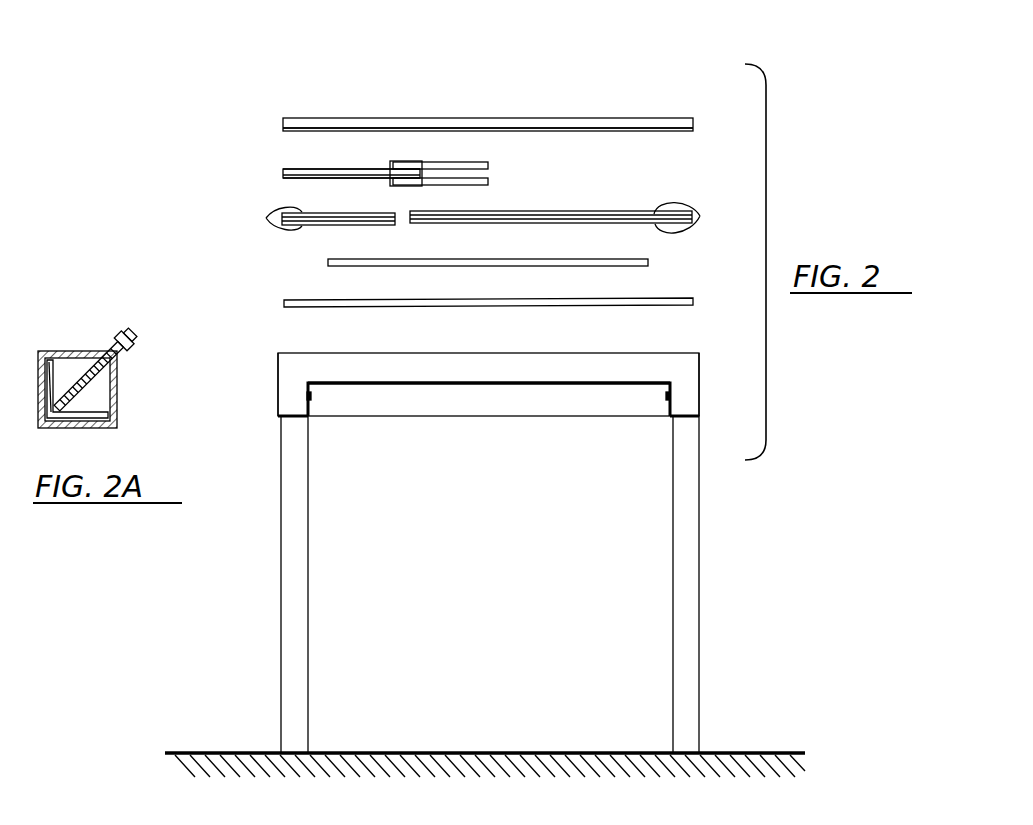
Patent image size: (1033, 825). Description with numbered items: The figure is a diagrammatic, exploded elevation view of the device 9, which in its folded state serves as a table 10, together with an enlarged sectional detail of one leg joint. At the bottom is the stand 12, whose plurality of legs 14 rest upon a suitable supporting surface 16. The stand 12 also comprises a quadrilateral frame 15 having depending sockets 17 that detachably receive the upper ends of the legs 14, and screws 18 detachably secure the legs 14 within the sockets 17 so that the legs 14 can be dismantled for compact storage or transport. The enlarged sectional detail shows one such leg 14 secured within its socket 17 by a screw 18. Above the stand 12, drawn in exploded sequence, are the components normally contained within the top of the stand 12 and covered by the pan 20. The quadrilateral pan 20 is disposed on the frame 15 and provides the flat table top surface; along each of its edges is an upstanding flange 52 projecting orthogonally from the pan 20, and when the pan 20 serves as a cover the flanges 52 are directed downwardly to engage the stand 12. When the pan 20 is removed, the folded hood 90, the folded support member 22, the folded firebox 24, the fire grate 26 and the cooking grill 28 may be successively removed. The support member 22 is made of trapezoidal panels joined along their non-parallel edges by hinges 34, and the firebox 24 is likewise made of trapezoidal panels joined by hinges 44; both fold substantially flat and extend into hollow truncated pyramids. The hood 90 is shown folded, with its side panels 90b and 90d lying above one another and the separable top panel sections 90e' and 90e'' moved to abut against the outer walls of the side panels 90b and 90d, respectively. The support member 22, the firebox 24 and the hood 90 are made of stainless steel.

In FIG. 2, the device 9 is at (160, 160).
In FIG. 2, the table 10 is at (545, 90).
In FIG. 2, the stand 12 is at (489, 388).
In FIG. 2, the legs 14 is at (308, 610).
In FIG. 2A, the legs 14 is at (60, 372).
In FIG. 2, the quadrilateral frame 15 is at (596, 373).
In FIG. 2, the supporting surface 16 is at (222, 750).
In FIG. 2, the sockets 17 is at (282, 403).
In FIG. 2A, the sockets 17 is at (117, 414).
In FIG. 2, the screws 18 is at (313, 396).
In FIG. 2A, the screws 18 is at (134, 330).
In FIG. 2, the pan 20 is at (423, 113).
In FIG. 2, the support member 22 is at (302, 230).
In FIG. 2, the firebox 24 is at (590, 208).
In FIG. 2, the fire grate 26 is at (489, 244).
In FIG. 2, the cooking grill 28 is at (515, 299).
In FIG. 2, the hinges 34 is at (270, 218).
In FIG. 2, the hinges 44 is at (700, 216).
In FIG. 2, the upstanding flange 52 is at (636, 124).
In FIG. 2, the hood 90 is at (280, 164).
In FIG. 2, the side panel 90b is at (320, 178).
In FIG. 2, the side panel 90d is at (320, 169).
In FIG. 2, the top panel section 90e' is at (470, 154).
In FIG. 2, the top panel section 90e'' is at (470, 184).